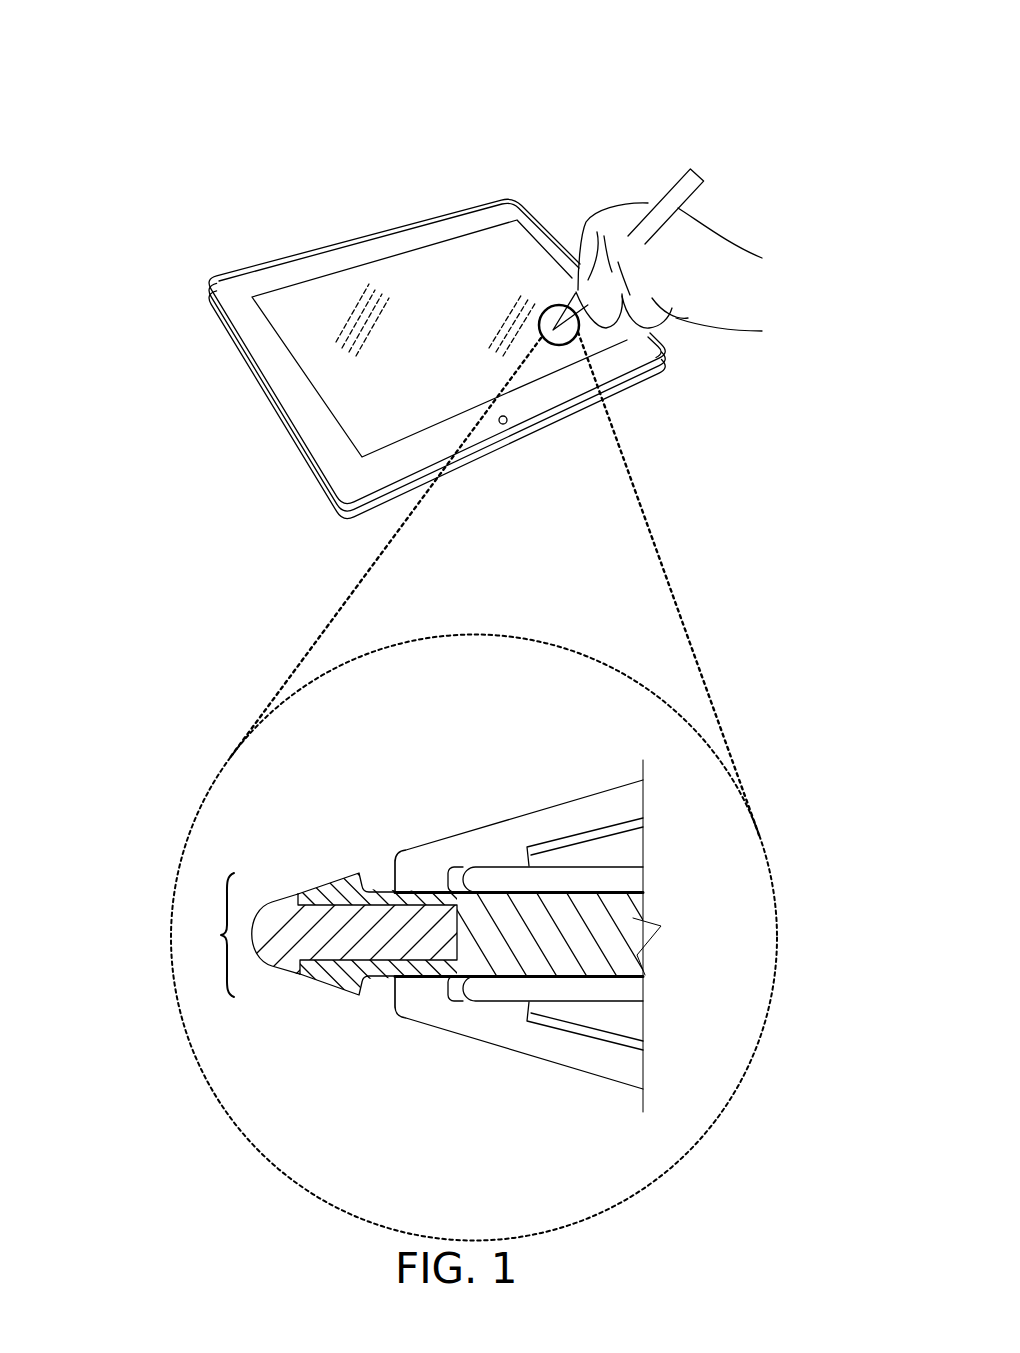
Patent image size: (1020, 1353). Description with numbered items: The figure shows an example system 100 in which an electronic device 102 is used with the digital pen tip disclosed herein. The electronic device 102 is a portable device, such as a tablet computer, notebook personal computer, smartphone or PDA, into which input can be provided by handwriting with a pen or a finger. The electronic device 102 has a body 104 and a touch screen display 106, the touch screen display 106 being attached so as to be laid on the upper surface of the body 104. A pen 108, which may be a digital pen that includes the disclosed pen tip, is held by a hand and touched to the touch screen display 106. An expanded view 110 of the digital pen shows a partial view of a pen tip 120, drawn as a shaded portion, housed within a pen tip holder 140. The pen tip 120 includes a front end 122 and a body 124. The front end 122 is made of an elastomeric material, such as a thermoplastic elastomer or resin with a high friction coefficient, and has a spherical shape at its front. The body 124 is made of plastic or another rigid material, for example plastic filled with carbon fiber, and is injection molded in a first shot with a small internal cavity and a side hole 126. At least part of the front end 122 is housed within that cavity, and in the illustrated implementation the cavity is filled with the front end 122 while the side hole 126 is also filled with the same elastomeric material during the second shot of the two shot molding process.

The touch-sensitive system 100 is at (166, 62).
The electronic device 102 is at (250, 420).
The body 104 is at (302, 468).
The touch screen display 106 is at (298, 323).
The pen 108 is at (687, 188).
The expanded view 110 is at (201, 776).
The pen tip 120 is at (203, 927).
The front end 122 is at (275, 897).
The body 124 is at (327, 986).
The side hole 126 is at (380, 890).
The pen tip holder 140 is at (560, 1066).